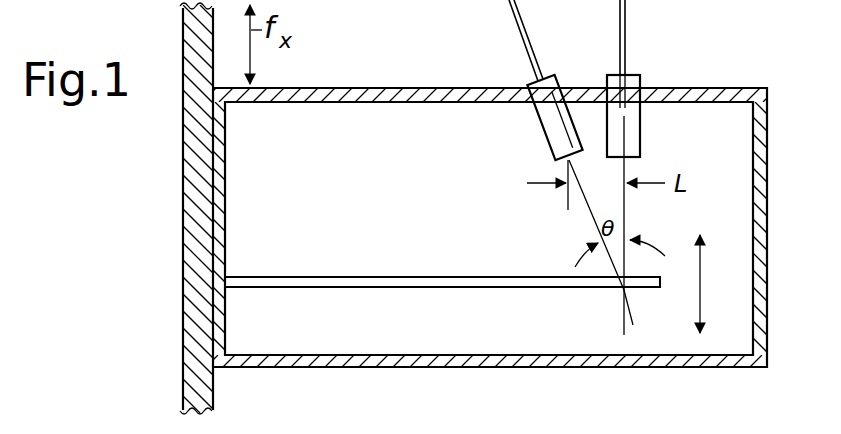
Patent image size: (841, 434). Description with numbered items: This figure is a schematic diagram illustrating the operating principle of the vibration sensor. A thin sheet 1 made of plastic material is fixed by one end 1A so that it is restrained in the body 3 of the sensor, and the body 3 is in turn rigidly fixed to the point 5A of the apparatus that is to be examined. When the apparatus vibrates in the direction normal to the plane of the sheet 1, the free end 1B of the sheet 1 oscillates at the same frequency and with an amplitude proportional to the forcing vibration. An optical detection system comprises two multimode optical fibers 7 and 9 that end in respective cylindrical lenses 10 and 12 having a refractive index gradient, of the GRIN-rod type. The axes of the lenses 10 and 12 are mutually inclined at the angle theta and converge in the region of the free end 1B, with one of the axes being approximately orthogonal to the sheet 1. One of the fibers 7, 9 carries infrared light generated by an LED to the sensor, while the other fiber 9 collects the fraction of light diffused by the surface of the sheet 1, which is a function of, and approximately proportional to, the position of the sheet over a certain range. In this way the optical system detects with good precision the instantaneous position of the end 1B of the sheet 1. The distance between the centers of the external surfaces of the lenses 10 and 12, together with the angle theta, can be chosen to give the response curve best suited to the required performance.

The thin sheet 1 is at (410, 289).
The fixed end of the sheet 1A is at (244, 290).
The free end of the sheet 1B is at (645, 290).
The body of the sensor 3 is at (428, 374).
The point of the apparatus 5A is at (190, 236).
The multimode optical fiber 7 is at (514, 24).
The multimode optical fiber 9 is at (619, 23).
The cylindrical lens 10 is at (548, 131).
The cylindrical lens 12 is at (641, 138).